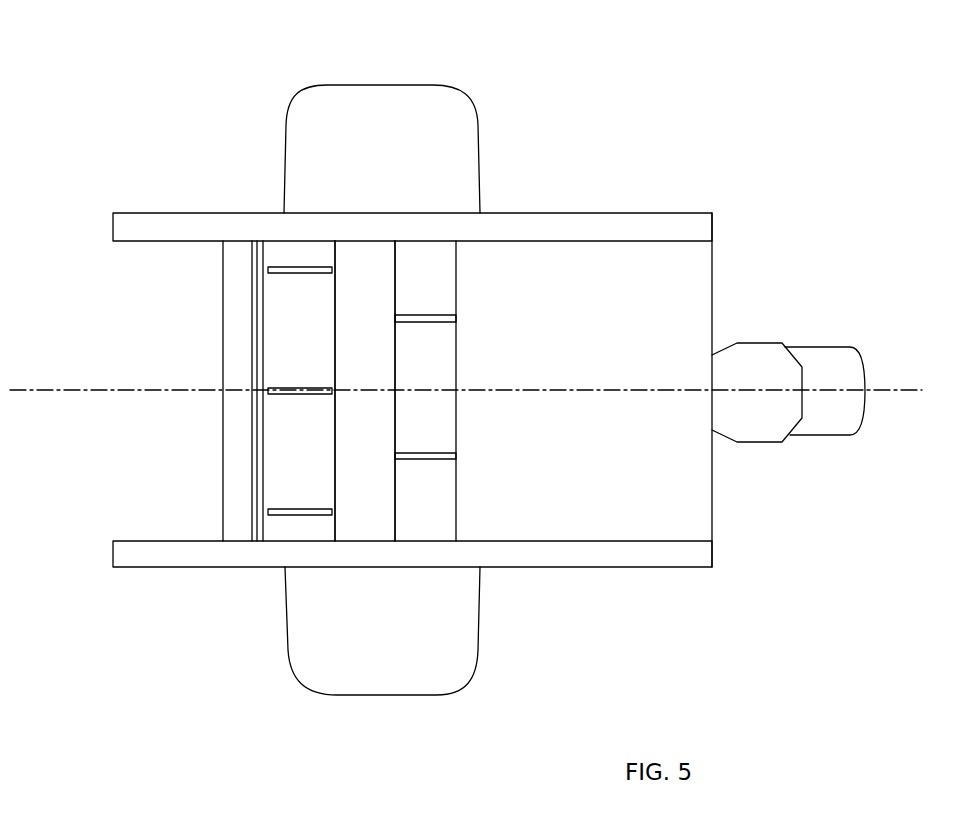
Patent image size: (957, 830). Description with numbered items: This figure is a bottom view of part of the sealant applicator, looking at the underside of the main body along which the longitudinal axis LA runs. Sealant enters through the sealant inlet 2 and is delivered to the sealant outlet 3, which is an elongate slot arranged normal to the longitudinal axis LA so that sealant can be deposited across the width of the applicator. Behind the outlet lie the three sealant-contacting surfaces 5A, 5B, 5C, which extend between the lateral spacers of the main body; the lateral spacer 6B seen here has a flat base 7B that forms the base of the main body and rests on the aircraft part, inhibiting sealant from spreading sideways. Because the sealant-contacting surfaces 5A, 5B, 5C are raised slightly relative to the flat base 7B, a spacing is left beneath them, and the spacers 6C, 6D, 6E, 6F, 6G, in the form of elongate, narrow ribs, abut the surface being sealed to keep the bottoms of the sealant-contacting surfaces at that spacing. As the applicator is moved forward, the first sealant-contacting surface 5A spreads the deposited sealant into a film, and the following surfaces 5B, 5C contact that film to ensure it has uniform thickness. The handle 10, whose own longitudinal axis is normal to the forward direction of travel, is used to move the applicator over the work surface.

The sealant inlet 2 is at (868, 393).
The sealant outlet 3 is at (253, 369).
The sealant-contacting surface 5A is at (293, 255).
The sealant-contacting surface 5B is at (365, 260).
The sealant-contacting surface 5C is at (435, 270).
The lateral spacer 6B is at (685, 225).
The spacer 6C is at (268, 268).
The spacer 6D is at (268, 392).
The spacer 6E is at (290, 508).
The spacer 6F is at (433, 460).
The spacer 6G is at (434, 316).
The flat base 7B is at (650, 558).
The handle 10 is at (315, 138).
The longitudinal axis LA is at (75, 390).